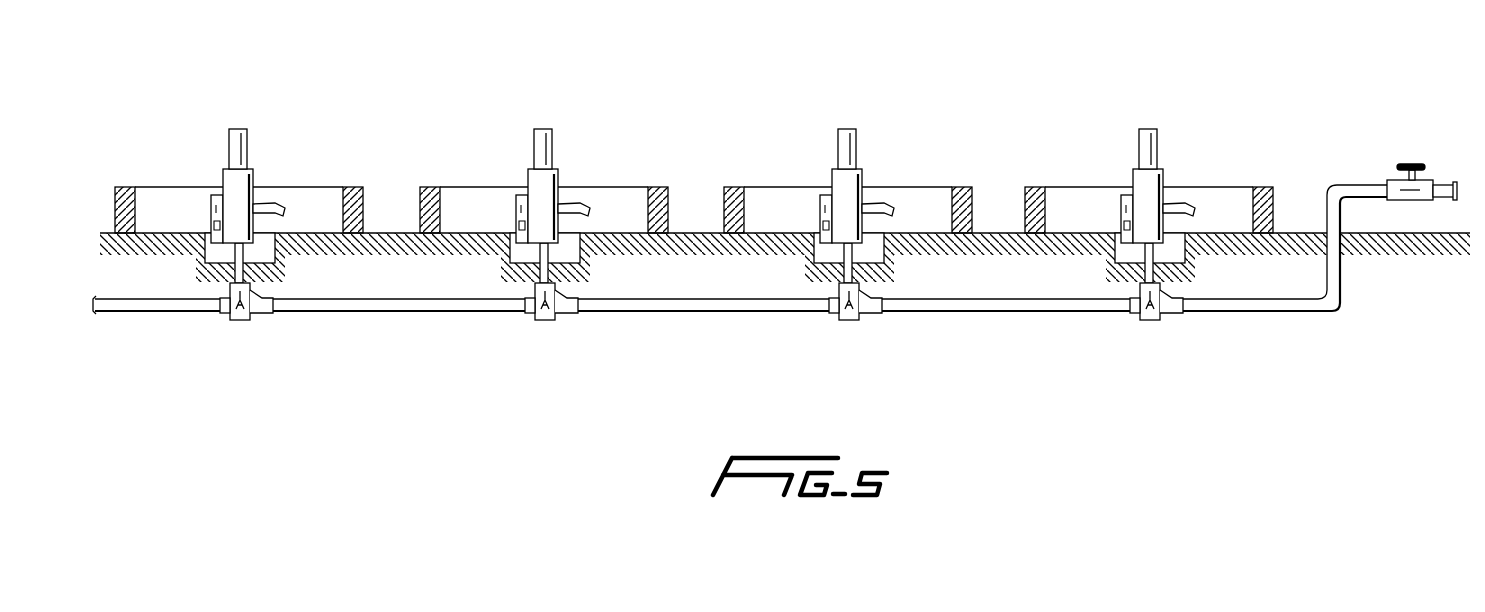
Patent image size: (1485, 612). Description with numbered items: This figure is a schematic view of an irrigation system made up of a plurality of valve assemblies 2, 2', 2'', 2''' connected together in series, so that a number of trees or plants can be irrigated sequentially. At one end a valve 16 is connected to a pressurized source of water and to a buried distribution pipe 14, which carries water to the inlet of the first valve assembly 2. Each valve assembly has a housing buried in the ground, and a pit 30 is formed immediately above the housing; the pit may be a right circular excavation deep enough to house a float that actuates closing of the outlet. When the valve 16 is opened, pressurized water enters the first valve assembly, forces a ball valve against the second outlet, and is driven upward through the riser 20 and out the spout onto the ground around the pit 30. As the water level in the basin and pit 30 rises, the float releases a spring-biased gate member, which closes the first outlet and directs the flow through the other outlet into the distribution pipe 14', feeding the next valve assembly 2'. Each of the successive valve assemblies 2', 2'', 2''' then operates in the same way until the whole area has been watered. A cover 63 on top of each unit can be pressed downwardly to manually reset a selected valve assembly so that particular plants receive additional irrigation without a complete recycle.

The valve assembly 2 is at (1149, 151).
The valve assembly 2' is at (848, 161).
The valve assembly 2'' is at (544, 160).
The valve assembly 2''' is at (239, 164).
The cover 63 is at (238, 129).
The pit 30 is at (215, 250).
The distribution pipe 14 is at (1258, 291).
The distribution pipe 14' is at (611, 347).
The riser 20 is at (1163, 253).
The valve 16 is at (1413, 163).